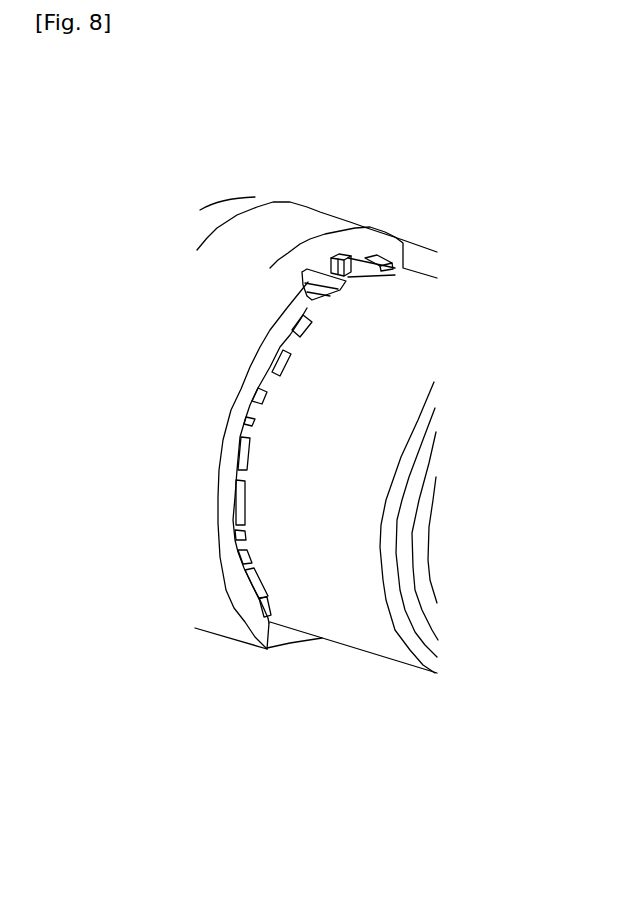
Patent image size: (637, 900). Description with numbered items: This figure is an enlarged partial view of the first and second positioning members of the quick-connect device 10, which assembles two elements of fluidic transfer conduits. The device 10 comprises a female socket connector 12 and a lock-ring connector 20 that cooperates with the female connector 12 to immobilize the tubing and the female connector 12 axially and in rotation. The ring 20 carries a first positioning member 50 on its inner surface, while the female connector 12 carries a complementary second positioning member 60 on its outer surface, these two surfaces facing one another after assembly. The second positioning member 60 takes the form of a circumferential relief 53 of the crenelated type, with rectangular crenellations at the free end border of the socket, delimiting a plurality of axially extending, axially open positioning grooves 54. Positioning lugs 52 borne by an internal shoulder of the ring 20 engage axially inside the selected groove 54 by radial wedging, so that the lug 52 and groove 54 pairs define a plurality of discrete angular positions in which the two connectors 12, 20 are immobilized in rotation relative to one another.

The quick-connect device 10 is at (297, 163).
The female socket connector 12 is at (316, 568).
The lock-ring connector 20 is at (289, 220).
The first positioning member 50 is at (180, 517).
The positioning lug 52 is at (168, 502).
The circumferential relief 53 is at (206, 321).
The positioning groove 54 is at (367, 202).
The second positioning member 60 is at (415, 312).